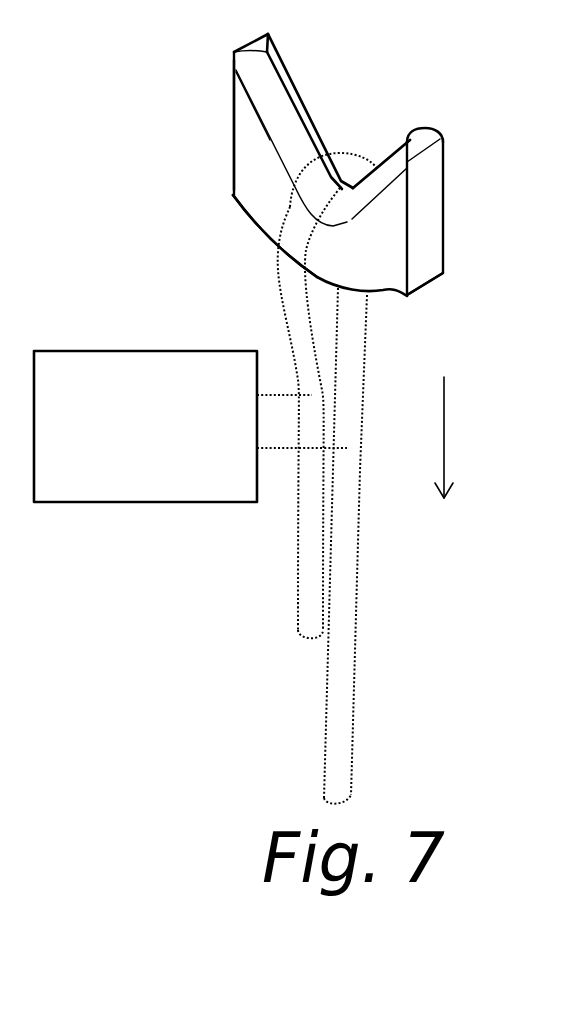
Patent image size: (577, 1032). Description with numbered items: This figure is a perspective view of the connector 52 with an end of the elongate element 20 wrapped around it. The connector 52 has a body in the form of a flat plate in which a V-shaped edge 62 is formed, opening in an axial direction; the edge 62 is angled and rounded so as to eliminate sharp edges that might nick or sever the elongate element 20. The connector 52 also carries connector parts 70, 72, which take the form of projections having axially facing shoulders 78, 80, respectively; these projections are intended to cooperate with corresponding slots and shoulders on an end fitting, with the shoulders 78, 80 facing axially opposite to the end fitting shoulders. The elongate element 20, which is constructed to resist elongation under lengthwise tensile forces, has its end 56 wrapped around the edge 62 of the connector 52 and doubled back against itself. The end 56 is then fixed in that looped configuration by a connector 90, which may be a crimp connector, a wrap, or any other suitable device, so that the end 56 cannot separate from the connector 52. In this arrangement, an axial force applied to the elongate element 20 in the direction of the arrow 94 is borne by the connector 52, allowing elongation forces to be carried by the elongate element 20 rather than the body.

The elongate element 20 is at (342, 687).
The connector 52 is at (377, 230).
The elongate element end 56 is at (308, 566).
The V-shaped edge 62 is at (336, 180).
The connector part 70 is at (432, 187).
The connector part 72 is at (233, 133).
The axially facing shoulder 78 is at (432, 285).
The axially facing shoulder 80 is at (235, 198).
The connector 90 is at (162, 463).
The arrow 94 is at (445, 439).